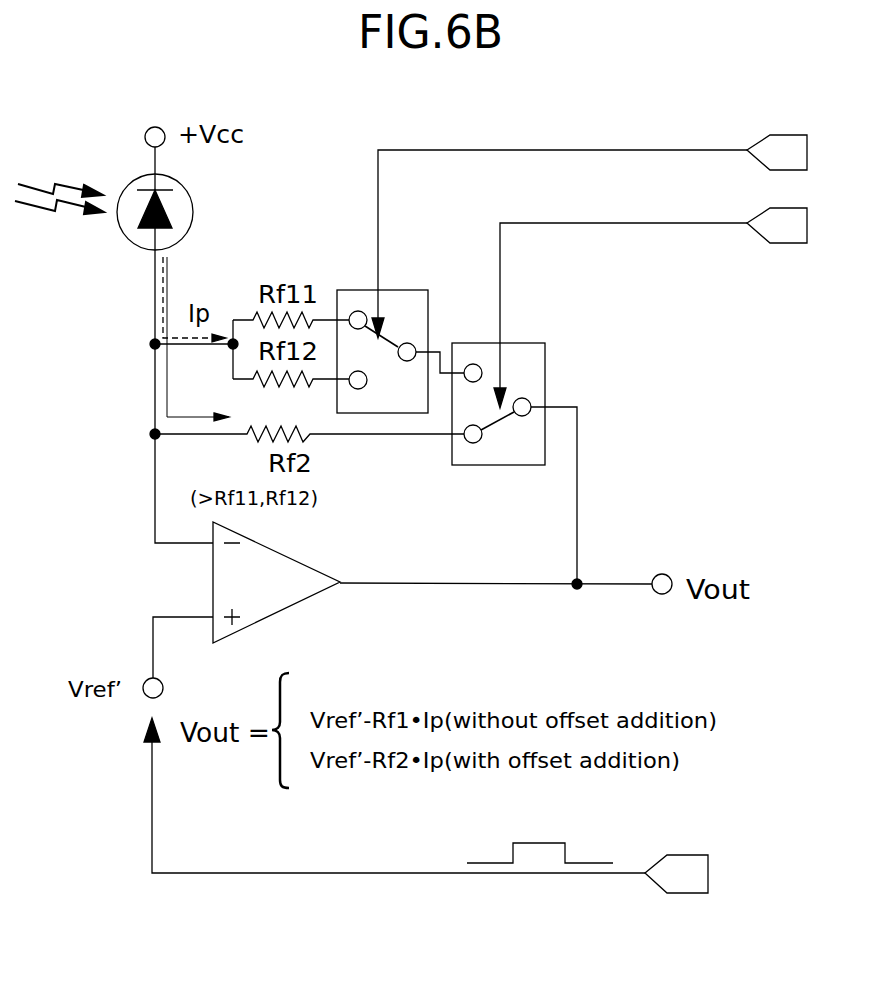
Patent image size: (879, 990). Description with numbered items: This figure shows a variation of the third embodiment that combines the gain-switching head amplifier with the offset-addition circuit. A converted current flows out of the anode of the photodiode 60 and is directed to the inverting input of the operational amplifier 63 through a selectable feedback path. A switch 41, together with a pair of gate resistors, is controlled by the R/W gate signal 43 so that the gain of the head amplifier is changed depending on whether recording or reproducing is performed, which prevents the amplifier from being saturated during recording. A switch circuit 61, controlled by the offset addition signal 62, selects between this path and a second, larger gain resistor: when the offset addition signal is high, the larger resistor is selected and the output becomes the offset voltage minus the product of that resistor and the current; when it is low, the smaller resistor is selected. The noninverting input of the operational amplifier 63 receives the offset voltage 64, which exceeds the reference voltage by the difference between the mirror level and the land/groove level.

The photodiode 60 is at (202, 198).
The switch 41 is at (398, 290).
The switch circuit 61 is at (545, 378).
The R/W gate signal 43 is at (563, 150).
The offset addition signal 62 is at (655, 223).
The operational amplifier 63 is at (317, 560).
The offset voltage 64 is at (345, 873).